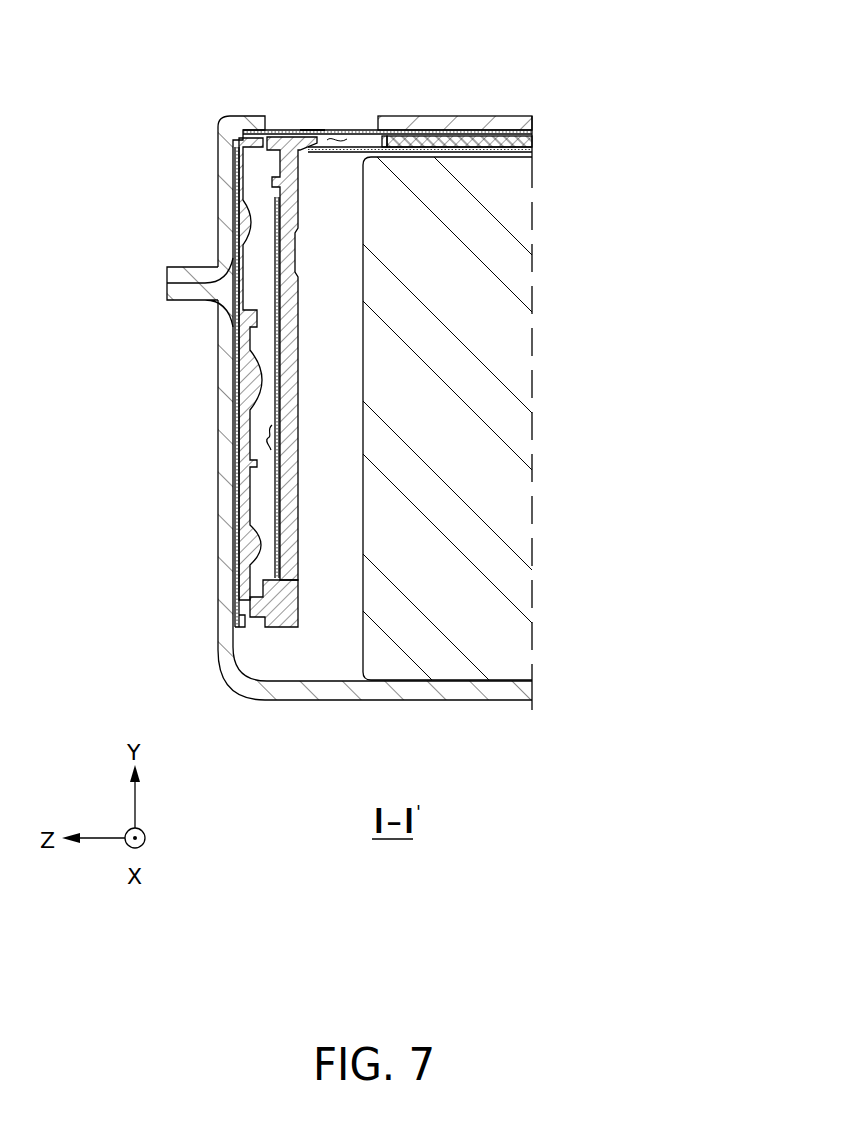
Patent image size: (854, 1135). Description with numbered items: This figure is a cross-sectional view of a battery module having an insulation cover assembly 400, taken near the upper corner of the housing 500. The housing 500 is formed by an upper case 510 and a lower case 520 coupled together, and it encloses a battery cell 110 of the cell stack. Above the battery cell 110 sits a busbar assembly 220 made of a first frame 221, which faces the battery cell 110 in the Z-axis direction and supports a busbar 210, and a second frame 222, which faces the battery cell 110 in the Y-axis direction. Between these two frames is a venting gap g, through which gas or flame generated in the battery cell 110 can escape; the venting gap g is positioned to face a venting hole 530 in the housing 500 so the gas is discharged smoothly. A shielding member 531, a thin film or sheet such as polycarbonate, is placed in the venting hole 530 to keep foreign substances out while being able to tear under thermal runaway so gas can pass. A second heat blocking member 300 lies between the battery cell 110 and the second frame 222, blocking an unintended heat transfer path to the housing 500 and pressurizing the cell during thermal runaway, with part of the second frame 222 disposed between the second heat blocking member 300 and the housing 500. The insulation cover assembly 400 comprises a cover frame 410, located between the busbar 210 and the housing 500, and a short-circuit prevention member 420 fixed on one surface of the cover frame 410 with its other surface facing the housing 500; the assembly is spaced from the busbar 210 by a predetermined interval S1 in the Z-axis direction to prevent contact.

The battery cell 110 is at (496, 340).
The busbar 210 is at (282, 527).
The busbar assembly 220 is at (655, 827).
The first frame 221 is at (255, 600).
The second frame 222 is at (534, 140).
The second heat blocking member 300 is at (358, 131).
The insulation cover assembly 400 is at (655, 721).
The cover frame 410 is at (250, 392).
The short-circuit prevention member 420 is at (238, 487).
The housing 500 is at (655, 929).
The upper case 510 is at (450, 125).
The lower case 520 is at (345, 690).
The venting hole 530 is at (294, 126).
The shielding member 531 is at (313, 129).
The venting gap g is at (340, 136).
The predetermined interval S1 is at (266, 437).